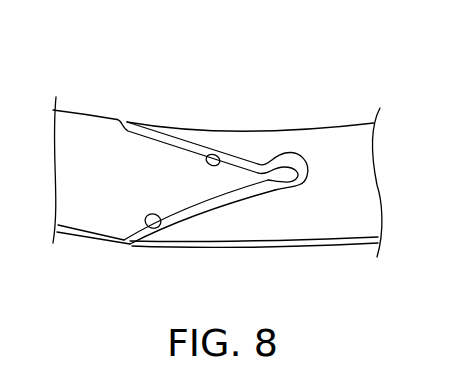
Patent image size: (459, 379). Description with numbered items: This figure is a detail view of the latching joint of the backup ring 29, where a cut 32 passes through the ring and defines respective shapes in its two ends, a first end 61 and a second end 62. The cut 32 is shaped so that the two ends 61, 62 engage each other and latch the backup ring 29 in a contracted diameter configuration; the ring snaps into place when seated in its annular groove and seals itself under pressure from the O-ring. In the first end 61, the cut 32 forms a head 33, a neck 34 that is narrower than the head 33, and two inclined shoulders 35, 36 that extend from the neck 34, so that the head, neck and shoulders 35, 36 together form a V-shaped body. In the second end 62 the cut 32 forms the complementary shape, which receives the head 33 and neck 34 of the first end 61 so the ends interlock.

The backup ring 29 is at (251, 179).
The cut 32 is at (153, 138).
The head 33 is at (285, 172).
The neck 34 is at (265, 178).
The inclined shoulder 35 is at (160, 227).
The inclined shoulder 36 is at (211, 157).
The first end 61 is at (77, 135).
The second end 62 is at (327, 222).